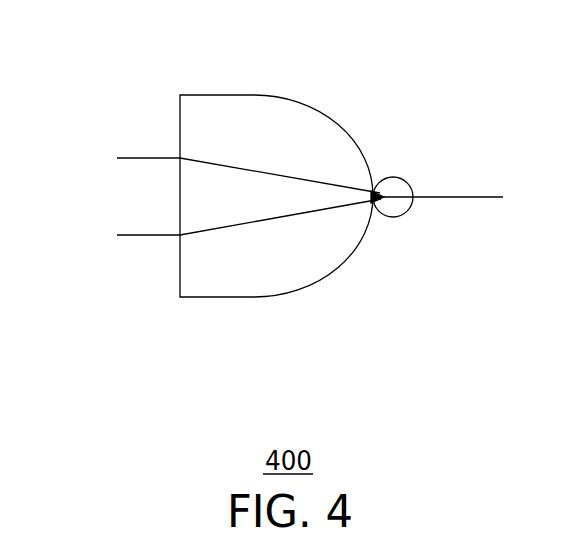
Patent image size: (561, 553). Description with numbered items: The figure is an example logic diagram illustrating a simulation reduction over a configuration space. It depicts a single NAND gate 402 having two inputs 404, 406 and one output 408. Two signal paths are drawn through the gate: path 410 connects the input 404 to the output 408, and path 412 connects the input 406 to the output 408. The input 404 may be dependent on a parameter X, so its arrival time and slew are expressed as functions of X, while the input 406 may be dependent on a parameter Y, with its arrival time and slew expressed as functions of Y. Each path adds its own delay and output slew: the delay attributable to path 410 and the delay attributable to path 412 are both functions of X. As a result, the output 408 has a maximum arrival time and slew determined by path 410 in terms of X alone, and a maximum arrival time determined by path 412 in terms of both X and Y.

The NAND gate 402 is at (207, 297).
The input 404 is at (134, 158).
The input 406 is at (135, 237).
The output 408 is at (458, 196).
The path 410 is at (233, 166).
The path 412 is at (276, 223).